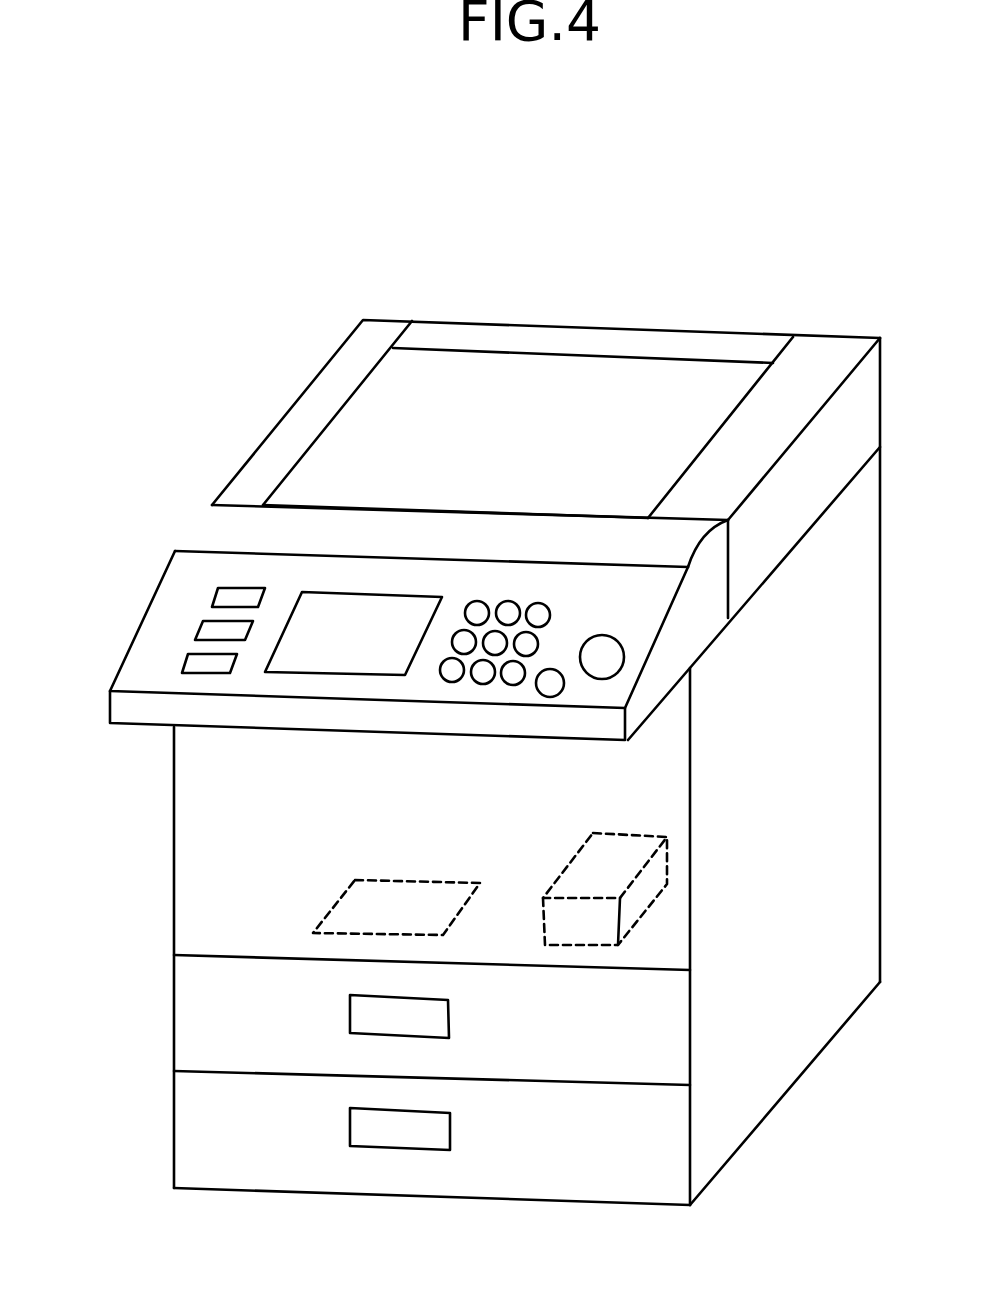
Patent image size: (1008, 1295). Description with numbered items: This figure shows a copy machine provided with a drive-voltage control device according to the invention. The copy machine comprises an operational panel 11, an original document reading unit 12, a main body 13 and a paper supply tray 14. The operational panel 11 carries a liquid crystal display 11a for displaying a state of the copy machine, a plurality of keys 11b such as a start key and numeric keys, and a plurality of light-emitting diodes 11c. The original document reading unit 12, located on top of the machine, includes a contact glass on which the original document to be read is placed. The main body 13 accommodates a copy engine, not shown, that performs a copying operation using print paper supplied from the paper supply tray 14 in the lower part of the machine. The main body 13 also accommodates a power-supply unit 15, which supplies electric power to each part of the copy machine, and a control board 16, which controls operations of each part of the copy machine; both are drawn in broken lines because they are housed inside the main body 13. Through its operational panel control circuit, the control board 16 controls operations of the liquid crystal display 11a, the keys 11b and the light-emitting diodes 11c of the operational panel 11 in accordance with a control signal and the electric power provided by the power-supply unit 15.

The operational panel 11 is at (422, 605).
The liquid crystal display 11a is at (325, 617).
The keys 11b is at (552, 613).
The light-emitting diodes 11c is at (203, 590).
The original document reading unit 12 is at (385, 434).
The main body 13 is at (155, 861).
The paper supply tray 14 is at (155, 1096).
The power-supply unit 15 is at (650, 908).
The control board 16 is at (418, 880).